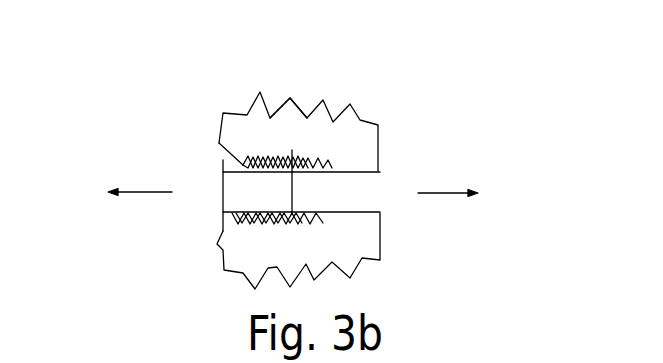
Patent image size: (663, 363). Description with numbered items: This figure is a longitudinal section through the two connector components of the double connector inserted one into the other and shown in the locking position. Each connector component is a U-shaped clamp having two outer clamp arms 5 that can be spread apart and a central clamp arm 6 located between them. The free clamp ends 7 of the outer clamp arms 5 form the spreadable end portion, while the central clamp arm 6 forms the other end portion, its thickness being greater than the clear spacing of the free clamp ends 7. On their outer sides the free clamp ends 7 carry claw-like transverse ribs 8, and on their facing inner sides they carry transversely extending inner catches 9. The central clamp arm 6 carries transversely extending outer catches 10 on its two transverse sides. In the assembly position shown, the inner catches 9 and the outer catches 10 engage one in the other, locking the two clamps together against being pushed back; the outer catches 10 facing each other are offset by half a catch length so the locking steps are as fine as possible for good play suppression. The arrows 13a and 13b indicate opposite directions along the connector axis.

The outer clamp arm 5 is at (353, 169).
The central clamp arm 6 is at (250, 205).
The free clamp end 7 is at (292, 82).
The claw-like transverse rib 8 is at (267, 102).
The inner catch 9 is at (298, 155).
The outer catch 10 is at (225, 172).
The direction of movement (right) 13a is at (442, 193).
The direction of movement (left) 13b is at (148, 193).